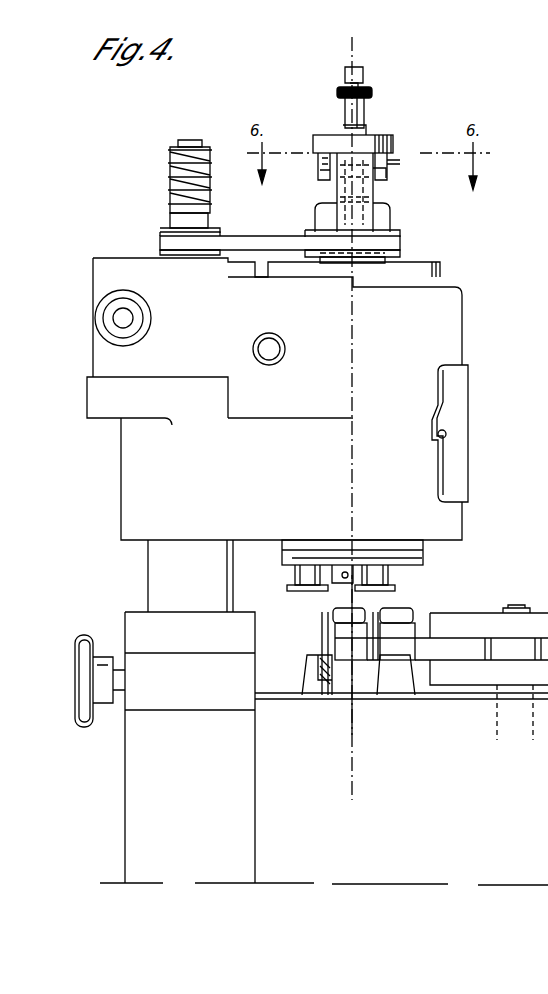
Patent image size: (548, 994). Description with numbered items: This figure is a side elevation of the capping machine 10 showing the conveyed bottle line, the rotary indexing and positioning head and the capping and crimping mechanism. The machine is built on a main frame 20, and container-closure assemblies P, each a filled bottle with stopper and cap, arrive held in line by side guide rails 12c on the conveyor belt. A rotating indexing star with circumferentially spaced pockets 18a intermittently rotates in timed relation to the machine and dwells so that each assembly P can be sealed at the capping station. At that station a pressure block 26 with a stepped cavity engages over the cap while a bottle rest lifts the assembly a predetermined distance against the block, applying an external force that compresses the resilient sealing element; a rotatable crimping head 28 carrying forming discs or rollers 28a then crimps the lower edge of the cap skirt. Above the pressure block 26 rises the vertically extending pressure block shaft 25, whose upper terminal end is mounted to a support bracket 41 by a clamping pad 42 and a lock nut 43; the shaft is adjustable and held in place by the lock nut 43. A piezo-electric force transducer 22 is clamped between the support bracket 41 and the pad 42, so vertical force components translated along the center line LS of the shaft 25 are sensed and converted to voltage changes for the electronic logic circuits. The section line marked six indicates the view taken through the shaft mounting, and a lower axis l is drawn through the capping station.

The center line of shaft LS is at (357, 52).
The pressure block shaft 25 is at (366, 118).
The support bracket 41 is at (395, 140).
The force transducer 22 is at (318, 157).
The clamping pad 42 is at (382, 183).
The lock nut 43 is at (332, 200).
The capping machine 10 is at (462, 291).
The side guide rails 12c is at (323, 634).
The rotatable crimping head 28 is at (425, 552).
The forming discs or rollers 28a is at (395, 600).
The pressure block 26 is at (340, 572).
The container-closure assembly P is at (360, 660).
The pockets 18a is at (494, 645).
The main frame 20 is at (268, 697).
The tool axis l is at (343, 775).